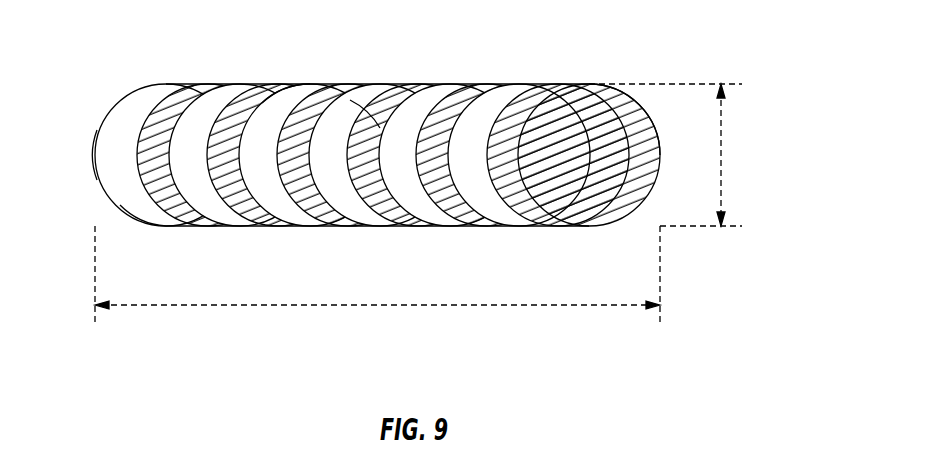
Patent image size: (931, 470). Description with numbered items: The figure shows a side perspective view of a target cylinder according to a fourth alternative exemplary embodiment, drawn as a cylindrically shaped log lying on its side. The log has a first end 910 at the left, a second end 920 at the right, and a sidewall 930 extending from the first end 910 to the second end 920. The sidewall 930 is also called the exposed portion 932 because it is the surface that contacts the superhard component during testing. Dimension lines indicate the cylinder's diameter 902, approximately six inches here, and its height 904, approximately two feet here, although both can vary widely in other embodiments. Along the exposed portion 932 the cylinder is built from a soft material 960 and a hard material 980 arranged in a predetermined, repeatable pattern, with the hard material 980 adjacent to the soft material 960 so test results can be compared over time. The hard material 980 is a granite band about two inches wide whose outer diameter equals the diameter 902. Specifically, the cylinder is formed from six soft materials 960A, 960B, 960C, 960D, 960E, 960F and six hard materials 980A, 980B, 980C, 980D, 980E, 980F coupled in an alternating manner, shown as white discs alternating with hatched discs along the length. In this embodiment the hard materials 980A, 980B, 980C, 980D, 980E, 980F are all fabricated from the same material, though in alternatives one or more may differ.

The diameter 902 is at (720, 155).
The height 904 is at (375, 305).
The first end 910 is at (98, 138).
The second end 920 is at (598, 92).
The sidewall 930 is at (280, 103).
The exposed portion 932 is at (373, 128).
The soft material 960 is at (141, 205).
The soft material 960A is at (143, 98).
The soft material 960B is at (210, 103).
The soft material 960C is at (293, 210).
The soft material 960D is at (338, 103).
The soft material 960E is at (438, 212).
The soft material 960F is at (497, 103).
The hard material 980 is at (635, 127).
The hard material 980A is at (175, 103).
The hard material 980B is at (243, 103).
The hard material 980C is at (320, 213).
The hard material 980D is at (387, 103).
The hard material 980E is at (465, 212).
The hard material 980F is at (532, 103).